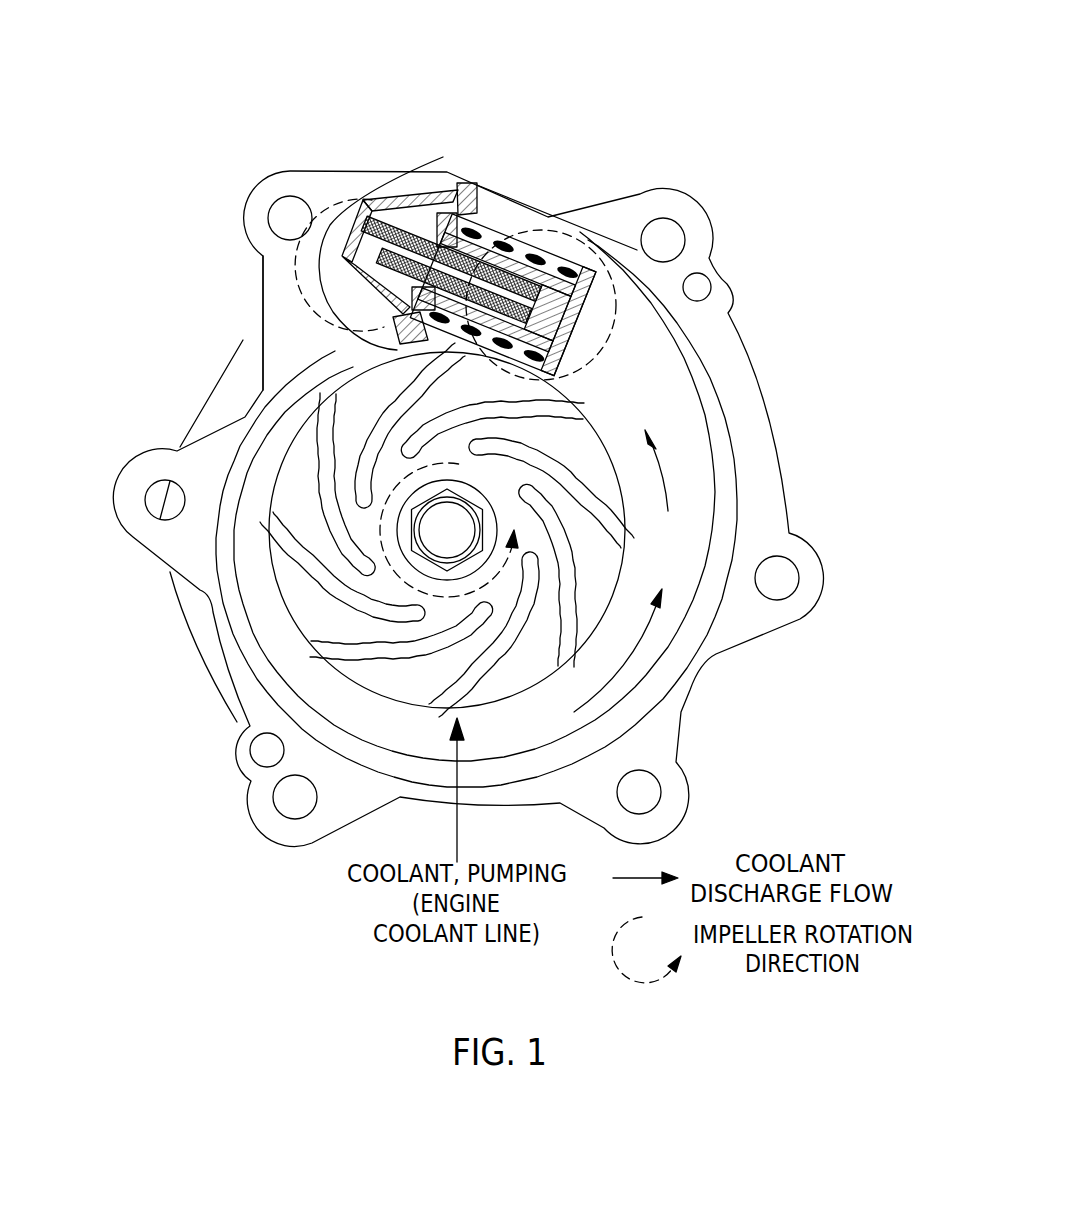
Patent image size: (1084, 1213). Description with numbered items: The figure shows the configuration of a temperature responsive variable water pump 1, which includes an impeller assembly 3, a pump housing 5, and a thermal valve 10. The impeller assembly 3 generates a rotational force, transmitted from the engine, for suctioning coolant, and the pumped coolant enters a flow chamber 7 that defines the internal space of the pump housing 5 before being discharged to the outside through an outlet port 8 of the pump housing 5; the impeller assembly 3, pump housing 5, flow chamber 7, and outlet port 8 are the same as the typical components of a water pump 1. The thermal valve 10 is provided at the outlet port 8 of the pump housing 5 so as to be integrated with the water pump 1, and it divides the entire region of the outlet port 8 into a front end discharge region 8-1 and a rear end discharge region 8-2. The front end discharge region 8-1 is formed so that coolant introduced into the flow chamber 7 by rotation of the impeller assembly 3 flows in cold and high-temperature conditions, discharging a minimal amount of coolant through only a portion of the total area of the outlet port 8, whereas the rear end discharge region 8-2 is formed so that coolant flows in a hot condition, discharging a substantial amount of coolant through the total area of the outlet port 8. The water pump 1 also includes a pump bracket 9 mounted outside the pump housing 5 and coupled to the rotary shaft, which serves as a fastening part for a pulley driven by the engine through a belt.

The water pump 1 is at (180, 270).
The impeller assembly 3 is at (403, 536).
The pump housing 5 is at (190, 468).
The flow chamber 7 is at (687, 494).
The outlet port 8 is at (466, 201).
The front end discharge region 8-1 is at (530, 230).
The rear end discharge region 8-2 is at (450, 185).
The pump bracket 9 is at (233, 383).
The thermal valve 10 is at (408, 250).